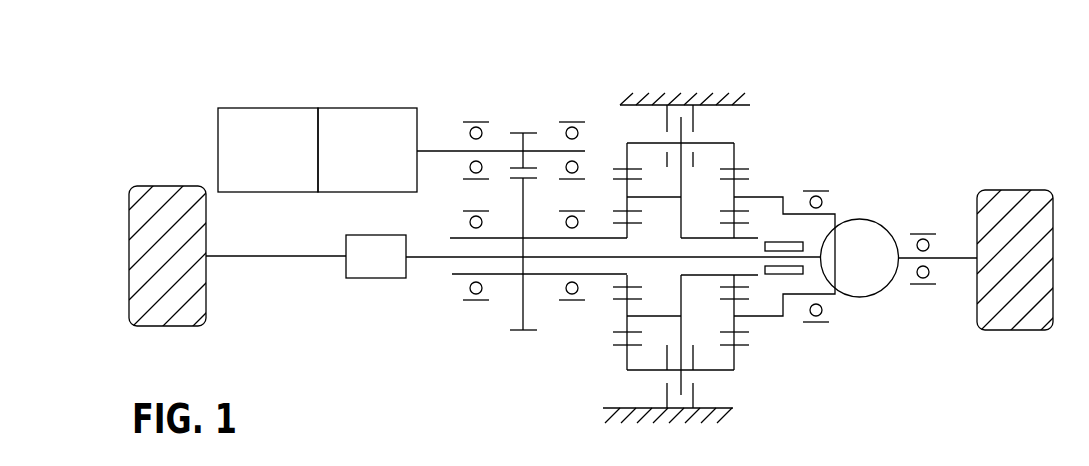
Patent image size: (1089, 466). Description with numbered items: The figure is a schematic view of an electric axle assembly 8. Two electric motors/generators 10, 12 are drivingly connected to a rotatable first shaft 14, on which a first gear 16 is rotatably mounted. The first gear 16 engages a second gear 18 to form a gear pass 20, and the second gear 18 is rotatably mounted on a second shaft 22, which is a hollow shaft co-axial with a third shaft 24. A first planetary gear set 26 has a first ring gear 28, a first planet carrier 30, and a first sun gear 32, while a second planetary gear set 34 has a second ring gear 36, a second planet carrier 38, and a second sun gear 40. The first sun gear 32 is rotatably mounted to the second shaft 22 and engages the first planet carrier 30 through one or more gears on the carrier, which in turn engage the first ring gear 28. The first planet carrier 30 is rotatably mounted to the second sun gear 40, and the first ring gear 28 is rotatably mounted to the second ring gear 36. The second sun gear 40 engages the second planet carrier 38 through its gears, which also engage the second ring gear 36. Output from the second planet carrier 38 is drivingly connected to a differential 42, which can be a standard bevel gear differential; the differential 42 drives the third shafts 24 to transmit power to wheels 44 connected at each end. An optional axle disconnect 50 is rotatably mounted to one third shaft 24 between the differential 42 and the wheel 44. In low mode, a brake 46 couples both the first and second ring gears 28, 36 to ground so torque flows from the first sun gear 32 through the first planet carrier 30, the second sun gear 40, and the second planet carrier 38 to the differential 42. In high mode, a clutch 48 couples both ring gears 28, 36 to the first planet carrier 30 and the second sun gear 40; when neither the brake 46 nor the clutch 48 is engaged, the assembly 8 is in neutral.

The electric axle assembly 8 is at (157, 82).
The electric motor/generator 10 is at (270, 108).
The electric motor/generator 12 is at (373, 108).
The first shaft 14 is at (440, 150).
The first gear 16 is at (521, 133).
The second gear 18 is at (526, 193).
The gear pass 20 is at (504, 186).
The second shaft 22 is at (455, 276).
The third shaft 24 is at (428, 258).
The first planetary gear set 26 is at (690, 153).
The first ring gear 28 is at (632, 142).
The first planet carrier 30 is at (627, 317).
The first sun gear 32 is at (637, 290).
The second planetary gear set 34 is at (810, 100).
The second ring gear 36 is at (740, 168).
The second planet carrier 38 is at (760, 197).
The second sun gear 40 is at (748, 222).
The differential 42 is at (872, 221).
The wheel 44 is at (165, 186).
The brake 46 is at (693, 78).
The clutch 48 is at (694, 152).
The axle disconnect 50 is at (372, 278).